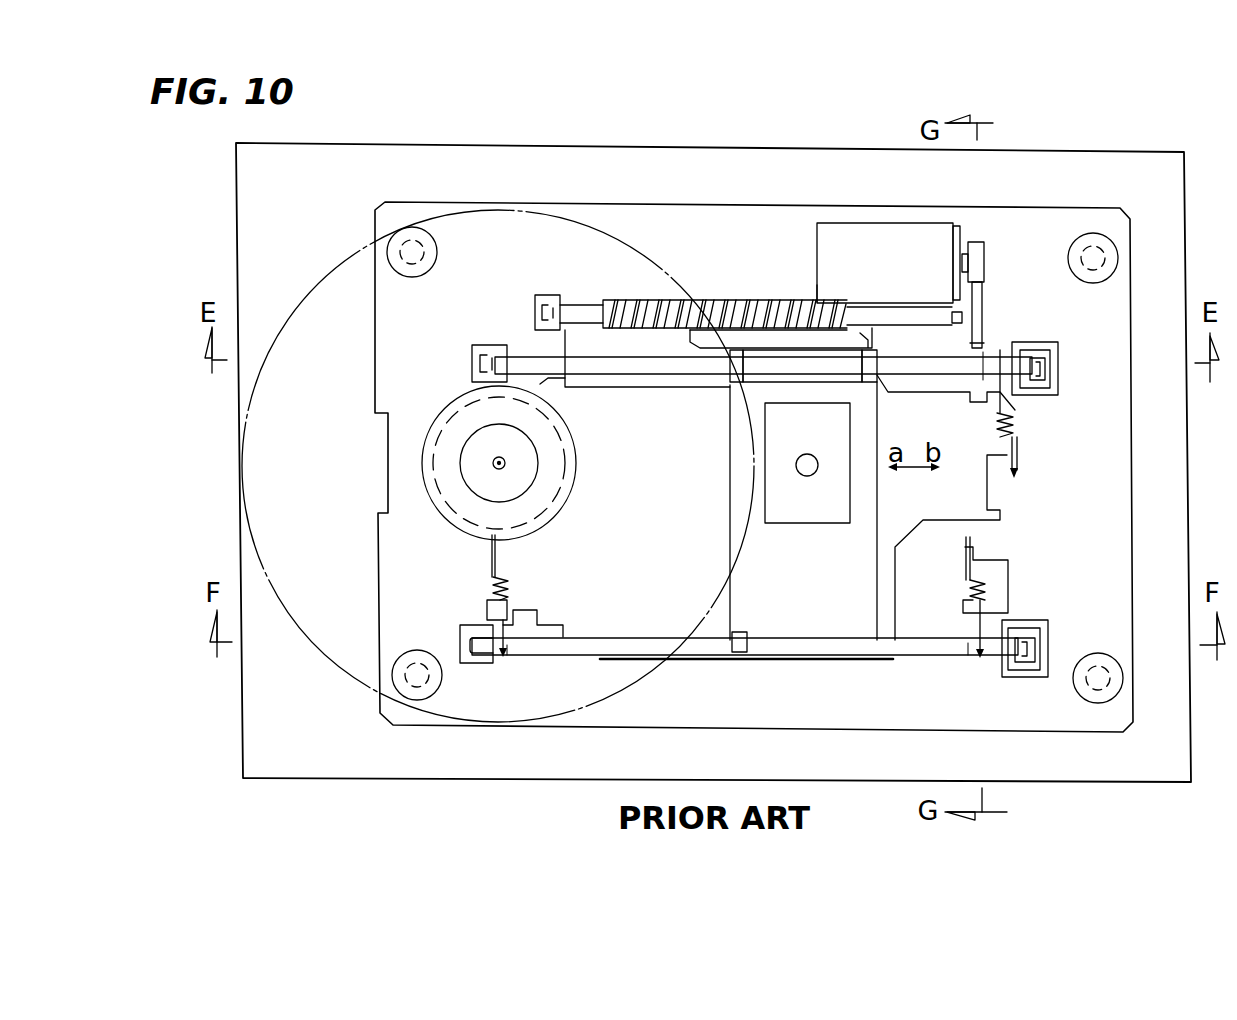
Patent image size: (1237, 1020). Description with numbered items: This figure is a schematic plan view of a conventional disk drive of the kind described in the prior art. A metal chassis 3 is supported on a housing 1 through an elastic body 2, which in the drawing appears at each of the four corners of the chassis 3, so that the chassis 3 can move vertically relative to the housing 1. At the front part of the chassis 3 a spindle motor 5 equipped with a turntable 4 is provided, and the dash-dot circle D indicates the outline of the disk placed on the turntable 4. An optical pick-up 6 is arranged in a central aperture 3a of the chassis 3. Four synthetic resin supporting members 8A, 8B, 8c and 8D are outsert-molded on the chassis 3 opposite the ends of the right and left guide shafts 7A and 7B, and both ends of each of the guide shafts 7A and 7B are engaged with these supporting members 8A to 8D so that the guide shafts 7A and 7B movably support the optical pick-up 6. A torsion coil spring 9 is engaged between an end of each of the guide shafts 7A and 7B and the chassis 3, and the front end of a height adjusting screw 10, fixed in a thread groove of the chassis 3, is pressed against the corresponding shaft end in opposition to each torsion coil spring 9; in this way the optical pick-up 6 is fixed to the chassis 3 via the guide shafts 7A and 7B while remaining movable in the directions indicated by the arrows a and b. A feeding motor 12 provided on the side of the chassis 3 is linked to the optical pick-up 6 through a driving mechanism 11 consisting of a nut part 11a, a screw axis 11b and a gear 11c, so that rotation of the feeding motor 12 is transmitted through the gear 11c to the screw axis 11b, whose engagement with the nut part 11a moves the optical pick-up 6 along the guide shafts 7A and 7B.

The housing 1 is at (640, 158).
The elastic body 2 is at (412, 277).
The metal chassis 3 is at (752, 215).
The central aperture 3a is at (633, 499).
The turntable 4 is at (450, 402).
The spindle motor 5 is at (450, 512).
The optical pick-up 6 is at (795, 581).
The guide shaft 7A is at (648, 374).
The guide shaft 7B is at (652, 639).
The supporting member 8A is at (487, 346).
The supporting member 8B is at (1048, 396).
The supporting member 8c is at (477, 664).
The supporting member 8D is at (1018, 678).
The torsion coil spring 9 is at (983, 401).
The height adjusting screw 10 is at (987, 357).
The driving mechanism 11 is at (714, 296).
The nut part 11a is at (883, 343).
The screw axis 11b is at (748, 304).
The gear 11c is at (981, 307).
The feeding motor 12 is at (872, 281).
The disc D is at (338, 258).